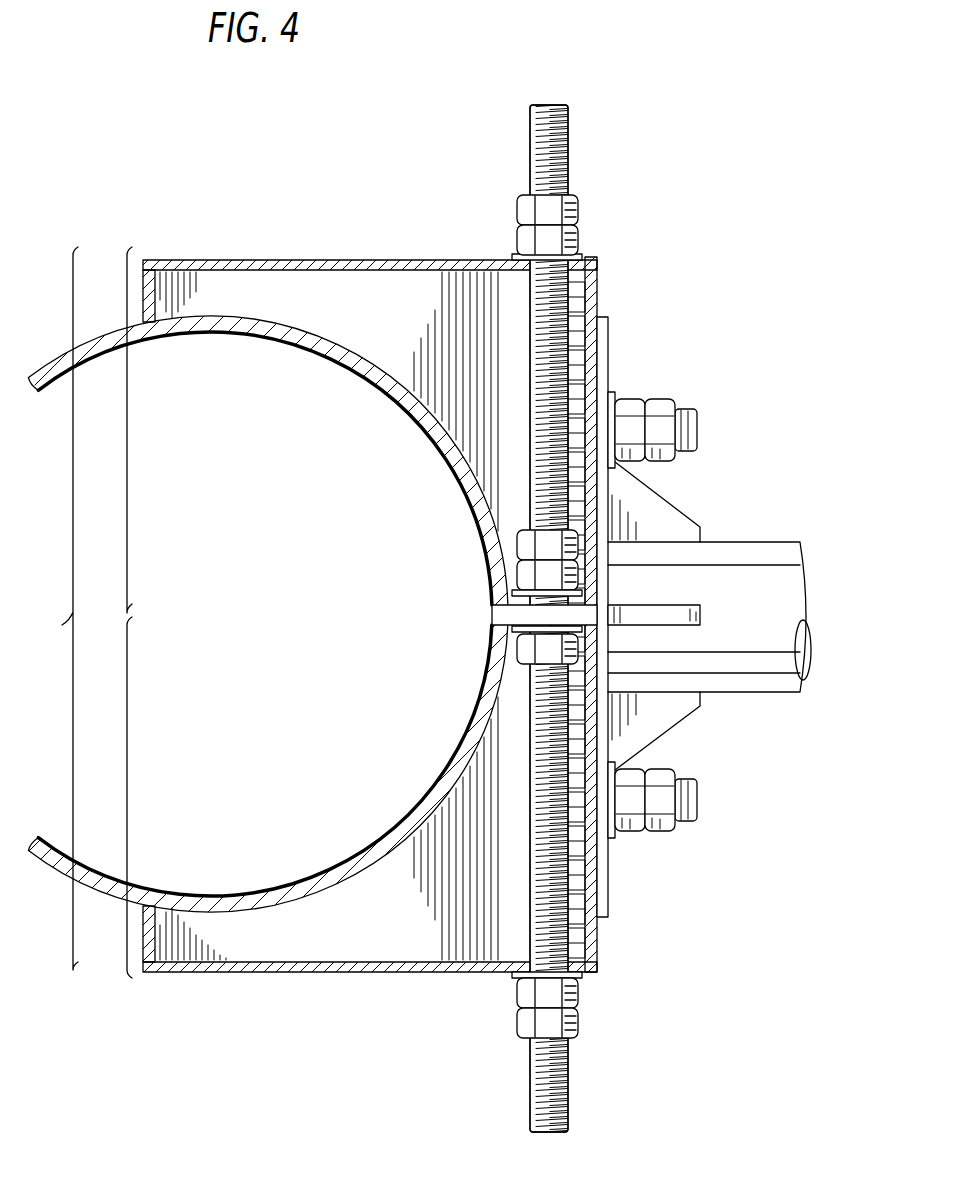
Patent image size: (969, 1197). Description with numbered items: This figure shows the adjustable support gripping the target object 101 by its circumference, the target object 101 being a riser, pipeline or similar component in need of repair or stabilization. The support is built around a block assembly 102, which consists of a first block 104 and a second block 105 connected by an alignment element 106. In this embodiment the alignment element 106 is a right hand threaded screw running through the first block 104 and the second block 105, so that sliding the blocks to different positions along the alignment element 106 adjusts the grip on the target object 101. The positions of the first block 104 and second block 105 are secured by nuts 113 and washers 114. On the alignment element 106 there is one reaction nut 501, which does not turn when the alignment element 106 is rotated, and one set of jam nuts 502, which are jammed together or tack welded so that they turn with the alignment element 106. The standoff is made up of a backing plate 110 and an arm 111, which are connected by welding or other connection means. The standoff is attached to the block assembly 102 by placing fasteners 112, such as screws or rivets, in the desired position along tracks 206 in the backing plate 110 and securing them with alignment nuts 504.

The target object 101 is at (262, 896).
The block assembly 102 is at (265, 612).
The first block 104 is at (268, 430).
The second block 105 is at (268, 797).
The alignment element 106 is at (567, 1082).
The backing plate 110 is at (603, 883).
The arm 111 is at (765, 688).
The fasteners 112 is at (699, 797).
The nuts 113 is at (580, 1022).
The washers 114 is at (512, 979).
The tracks 206 is at (600, 336).
The reaction nut 501 is at (520, 650).
The jam nuts 502 is at (520, 576).
The alignment nuts 504 is at (660, 832).